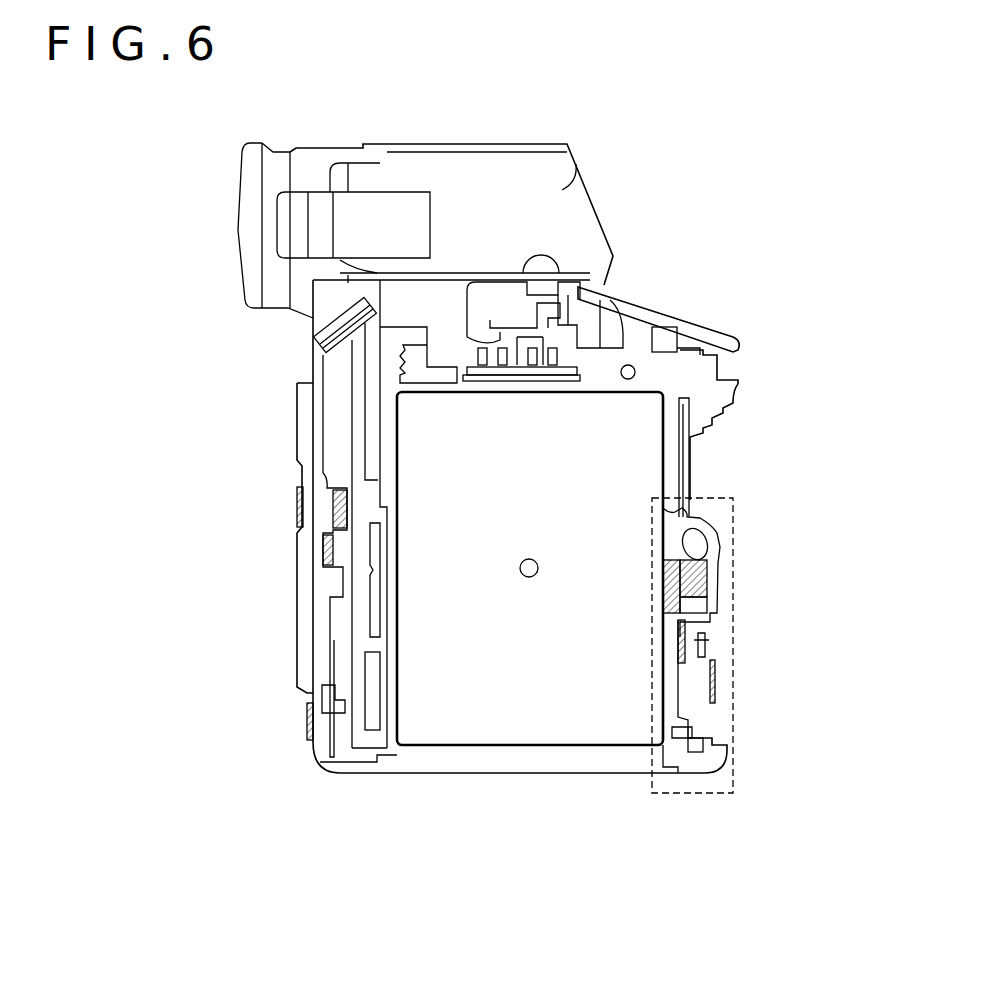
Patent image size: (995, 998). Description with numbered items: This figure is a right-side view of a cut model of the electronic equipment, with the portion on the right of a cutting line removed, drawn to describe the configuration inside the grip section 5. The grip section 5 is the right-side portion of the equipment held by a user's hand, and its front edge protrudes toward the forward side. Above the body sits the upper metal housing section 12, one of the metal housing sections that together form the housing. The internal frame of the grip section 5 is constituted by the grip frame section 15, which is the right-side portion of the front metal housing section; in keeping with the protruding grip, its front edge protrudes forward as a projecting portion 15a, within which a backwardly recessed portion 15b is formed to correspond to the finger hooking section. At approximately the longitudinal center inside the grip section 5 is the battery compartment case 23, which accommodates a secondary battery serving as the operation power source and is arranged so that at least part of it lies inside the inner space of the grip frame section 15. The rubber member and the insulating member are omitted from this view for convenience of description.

The upper metal housing section 12 is at (560, 188).
The grip section 5 is at (713, 823).
The battery compartment case 23 is at (455, 717).
The grip frame section 15 is at (639, 338).
The projecting portion 15a is at (688, 362).
The recessed portion 15b is at (724, 459).